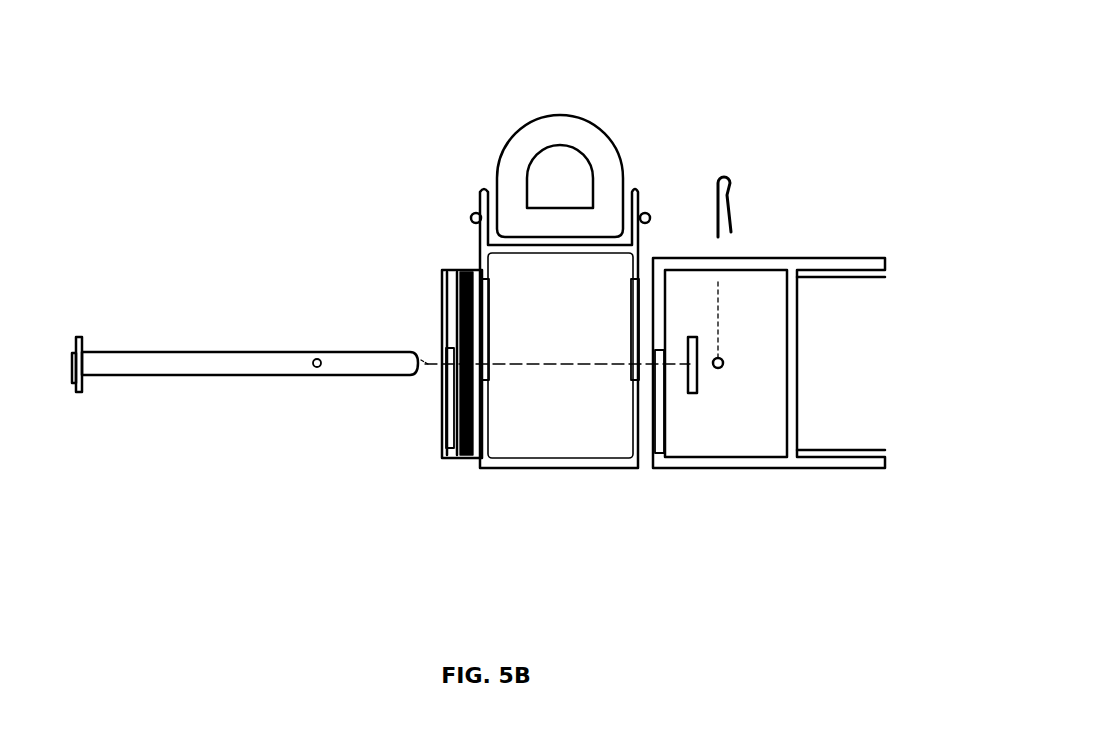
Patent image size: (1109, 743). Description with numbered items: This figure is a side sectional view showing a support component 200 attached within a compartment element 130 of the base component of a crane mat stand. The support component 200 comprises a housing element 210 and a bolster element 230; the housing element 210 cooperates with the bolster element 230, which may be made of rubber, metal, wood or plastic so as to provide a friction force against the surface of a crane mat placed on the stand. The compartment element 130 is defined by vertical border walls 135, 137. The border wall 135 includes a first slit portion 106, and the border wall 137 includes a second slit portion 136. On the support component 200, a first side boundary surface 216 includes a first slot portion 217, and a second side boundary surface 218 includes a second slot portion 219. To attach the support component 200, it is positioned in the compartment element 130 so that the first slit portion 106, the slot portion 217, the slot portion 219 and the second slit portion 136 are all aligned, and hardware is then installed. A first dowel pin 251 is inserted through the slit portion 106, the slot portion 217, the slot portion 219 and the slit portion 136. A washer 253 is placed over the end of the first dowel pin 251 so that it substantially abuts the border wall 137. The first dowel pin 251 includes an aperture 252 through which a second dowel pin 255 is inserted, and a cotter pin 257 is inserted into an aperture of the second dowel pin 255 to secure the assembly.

The support component 200 is at (523, 150).
The bolster element 230 is at (568, 133).
The housing element 210 is at (486, 256).
The compartment element 130 is at (462, 298).
The border wall 135 is at (457, 333).
The first slot portion 217 is at (467, 455).
The first slit portion 106 is at (445, 420).
The first side boundary surface 216 is at (483, 433).
The second side boundary surface 218 is at (635, 328).
The second slot portion 219 is at (638, 380).
The border wall 137 is at (662, 303).
The second slit portion 136 is at (665, 403).
The washer 253 is at (695, 373).
The second dowel pin 255 is at (727, 367).
The cotter pin 257 is at (730, 183).
The first dowel pin 251 is at (190, 365).
The aperture 252 is at (317, 362).